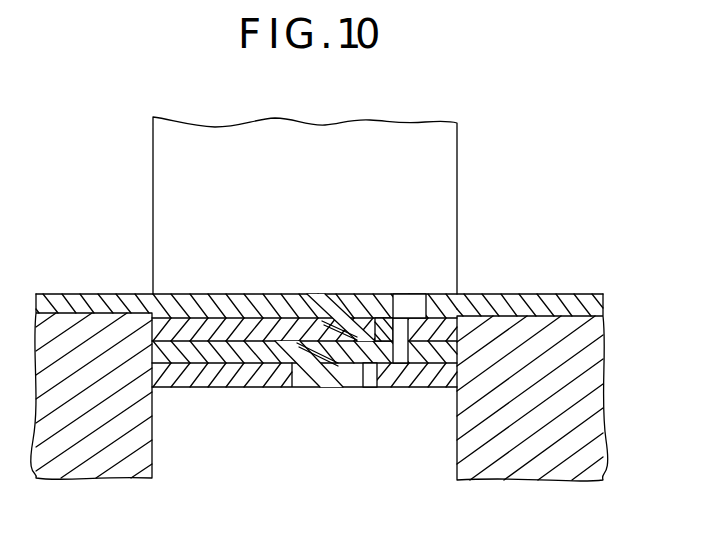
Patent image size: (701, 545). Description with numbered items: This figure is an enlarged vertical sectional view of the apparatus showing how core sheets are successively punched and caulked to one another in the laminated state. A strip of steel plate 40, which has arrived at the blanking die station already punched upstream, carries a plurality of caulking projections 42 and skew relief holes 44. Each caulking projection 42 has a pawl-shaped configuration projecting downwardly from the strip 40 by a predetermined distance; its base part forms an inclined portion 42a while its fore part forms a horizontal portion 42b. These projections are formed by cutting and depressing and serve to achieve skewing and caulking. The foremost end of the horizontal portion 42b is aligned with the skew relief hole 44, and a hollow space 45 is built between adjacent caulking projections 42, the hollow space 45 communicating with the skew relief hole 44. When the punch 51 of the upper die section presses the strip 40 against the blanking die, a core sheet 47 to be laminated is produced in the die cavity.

The strip of steel plate 40 is at (73, 290).
The punch 51 is at (162, 165).
The caulking projection 42 is at (345, 295).
The inclined portion 42a is at (365, 295).
The horizontal portion 42b is at (395, 295).
The skew relief hole 44 is at (415, 295).
The hollow space 45 is at (342, 346).
The core sheet 47 is at (214, 364).